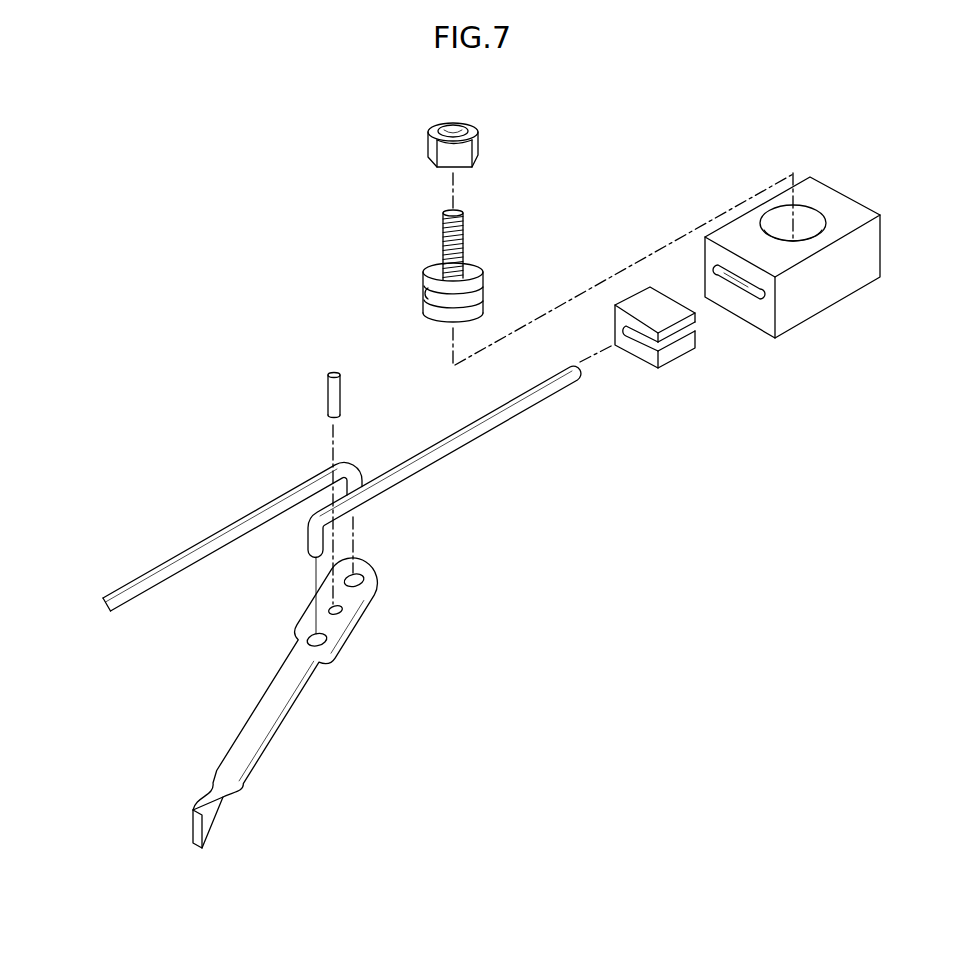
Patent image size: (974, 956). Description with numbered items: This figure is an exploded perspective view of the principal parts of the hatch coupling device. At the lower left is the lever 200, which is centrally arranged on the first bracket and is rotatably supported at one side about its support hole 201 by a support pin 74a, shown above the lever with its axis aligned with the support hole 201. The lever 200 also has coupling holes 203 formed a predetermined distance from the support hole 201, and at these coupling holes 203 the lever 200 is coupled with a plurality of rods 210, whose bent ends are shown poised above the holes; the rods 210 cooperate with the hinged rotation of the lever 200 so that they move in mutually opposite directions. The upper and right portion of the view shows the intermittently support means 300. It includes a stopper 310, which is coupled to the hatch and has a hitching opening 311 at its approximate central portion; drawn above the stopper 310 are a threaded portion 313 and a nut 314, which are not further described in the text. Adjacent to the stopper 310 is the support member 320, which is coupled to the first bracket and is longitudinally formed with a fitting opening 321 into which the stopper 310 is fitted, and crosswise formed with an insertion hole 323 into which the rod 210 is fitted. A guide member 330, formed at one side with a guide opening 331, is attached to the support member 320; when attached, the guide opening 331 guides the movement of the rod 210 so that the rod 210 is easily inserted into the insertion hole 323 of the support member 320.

The support pin 74a is at (327, 400).
The lever 200 is at (327, 697).
The support hole 201 is at (344, 607).
The coupling holes 203 is at (365, 574).
The rods 210 is at (155, 573).
The intermittently support means 300 is at (718, 192).
The stopper 310 is at (458, 285).
The hitching opening 311 is at (486, 292).
The threaded screw portion 313 is at (463, 243).
The nut 314 is at (478, 148).
The support member 320 is at (824, 262).
The fitting opening 321 is at (808, 218).
The insertion hole 323 is at (724, 284).
The guide member 330 is at (680, 349).
The guide opening 331 is at (636, 338).